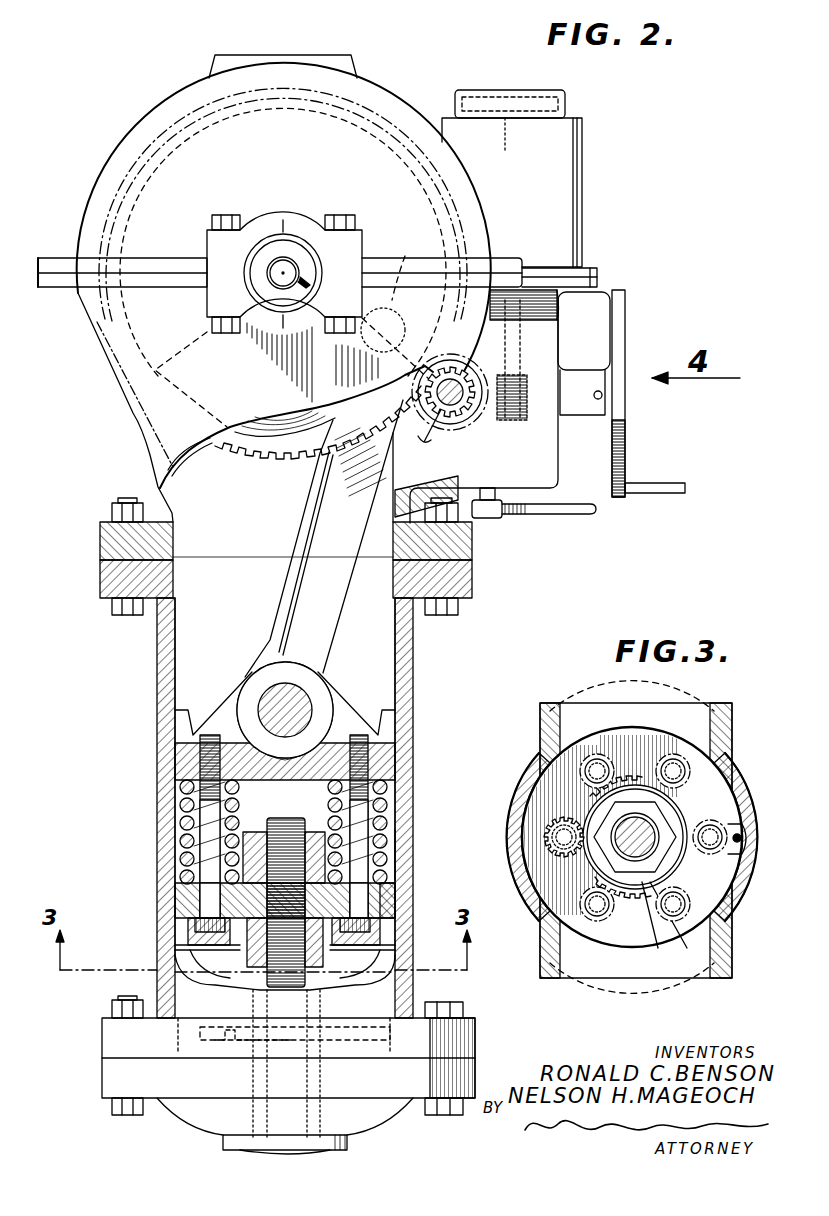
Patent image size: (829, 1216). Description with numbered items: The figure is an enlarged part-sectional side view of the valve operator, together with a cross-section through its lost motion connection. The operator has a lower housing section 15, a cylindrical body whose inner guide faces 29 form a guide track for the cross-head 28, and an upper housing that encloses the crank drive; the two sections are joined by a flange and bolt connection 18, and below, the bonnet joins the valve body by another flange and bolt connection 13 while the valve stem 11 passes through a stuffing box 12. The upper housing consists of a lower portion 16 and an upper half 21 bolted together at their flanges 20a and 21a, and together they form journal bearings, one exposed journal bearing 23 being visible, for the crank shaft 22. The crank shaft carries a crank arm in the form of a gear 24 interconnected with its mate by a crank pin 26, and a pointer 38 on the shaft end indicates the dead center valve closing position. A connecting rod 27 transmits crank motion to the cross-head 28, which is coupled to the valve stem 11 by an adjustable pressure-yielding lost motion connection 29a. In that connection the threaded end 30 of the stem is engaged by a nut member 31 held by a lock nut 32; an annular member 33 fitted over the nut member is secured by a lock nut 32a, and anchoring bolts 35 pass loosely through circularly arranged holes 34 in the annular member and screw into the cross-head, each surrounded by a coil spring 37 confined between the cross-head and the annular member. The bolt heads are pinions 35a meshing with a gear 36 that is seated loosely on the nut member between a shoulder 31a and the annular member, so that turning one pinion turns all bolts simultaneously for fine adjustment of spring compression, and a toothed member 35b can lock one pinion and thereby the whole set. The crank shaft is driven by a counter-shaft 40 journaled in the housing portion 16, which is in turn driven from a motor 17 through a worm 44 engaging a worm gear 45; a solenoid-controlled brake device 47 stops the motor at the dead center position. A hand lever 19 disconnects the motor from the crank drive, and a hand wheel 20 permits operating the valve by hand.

In FIG. 2, the valve stem 11 is at (222, 1137).
In FIG. 3, the valve stem 11 is at (642, 856).
In FIG. 2, the stuffing box 12 is at (248, 1042).
In FIG. 2, the flange and bolt connection 13 is at (102, 1050).
In FIG. 2, the lower housing section 15 is at (157, 712).
In FIG. 3, the lower housing section 15 is at (730, 920).
In FIG. 2, the upper housing section (lower portion) 16 is at (120, 395).
In FIG. 2, the motor 17 is at (578, 186).
In FIG. 2, the flange and bolt connection 18 is at (100, 573).
In FIG. 2, the hand lever 19 is at (561, 518).
In FIG. 2, the hand wheel 20 is at (628, 448).
In FIG. 2, the flange 20a is at (48, 300).
In FIG. 2, the upper half of upper housing section 21 is at (94, 189).
In FIG. 2, the flange 21a is at (48, 253).
In FIG. 2, the crank shaft 22 is at (272, 281).
In FIG. 2, the journal bearing 23 is at (277, 198).
In FIG. 2, the gear 24 is at (262, 458).
In FIG. 2, the crank pin 26 is at (389, 289).
In FIG. 2, the connecting rod 27 is at (306, 521).
In FIG. 2, the cross-head 28 is at (175, 750).
In FIG. 2, the inner guide faces 29 is at (176, 632).
In FIG. 3, the inner guide faces 29 is at (735, 780).
In FIG. 2, the lost motion connection 29a is at (414, 858).
In FIG. 2, the threaded end 30 is at (289, 817).
In FIG. 2, the nut member 31 is at (328, 921).
In FIG. 2, the shoulder 31a is at (196, 948).
In FIG. 3, the shoulder 31a is at (658, 947).
In FIG. 2, the lock nut 32 is at (248, 946).
In FIG. 3, the lock nut 32 is at (612, 853).
In FIG. 2, the lock nut 32a is at (255, 832).
In FIG. 2, the annular member 33 is at (396, 900).
In FIG. 3, the pinion 34 is at (548, 826).
In FIG. 2, the anchoring bolt 35 is at (180, 822).
In FIG. 2, the pinion 35a is at (424, 940).
In FIG. 3, the pinion 35a is at (540, 925).
In FIG. 3, the toothed member 35b is at (738, 822).
In FIG. 2, the gear 36 is at (190, 920).
In FIG. 3, the gear 36 is at (628, 898).
In FIG. 2, the coil spring 37 is at (200, 802).
In FIG. 2, the pointer 38 is at (302, 280).
In FIG. 2, the counter-shaft 40 is at (462, 428).
In FIG. 2, the worm 44 is at (501, 406).
In FIG. 2, the worm gear 45 is at (436, 438).
In FIG. 2, the brake device 47 is at (566, 100).